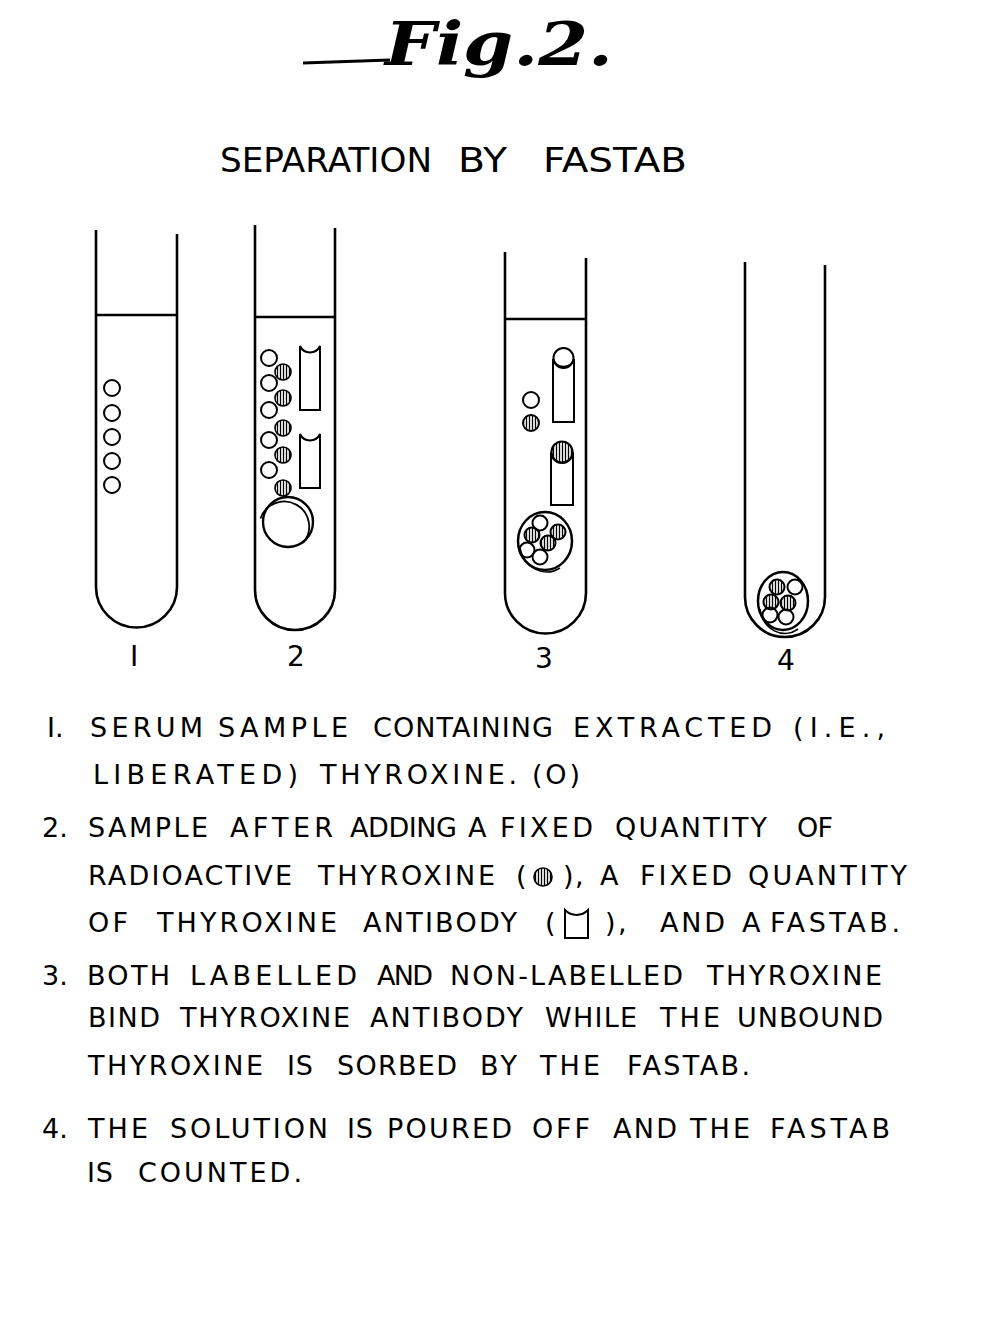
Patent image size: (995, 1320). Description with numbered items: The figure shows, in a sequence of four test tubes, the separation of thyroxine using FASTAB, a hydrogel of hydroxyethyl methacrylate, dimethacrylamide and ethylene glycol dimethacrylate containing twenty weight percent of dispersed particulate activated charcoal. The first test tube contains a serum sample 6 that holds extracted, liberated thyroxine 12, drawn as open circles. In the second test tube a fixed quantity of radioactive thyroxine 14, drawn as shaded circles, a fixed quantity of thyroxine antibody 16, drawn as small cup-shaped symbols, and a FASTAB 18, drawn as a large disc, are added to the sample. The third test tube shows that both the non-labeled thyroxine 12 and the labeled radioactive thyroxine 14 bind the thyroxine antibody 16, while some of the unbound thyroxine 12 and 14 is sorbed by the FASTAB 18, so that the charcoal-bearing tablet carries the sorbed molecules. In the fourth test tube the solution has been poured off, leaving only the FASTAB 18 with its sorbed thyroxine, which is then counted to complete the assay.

The serum sample 6 is at (112, 307).
The extracted thyroxine 12 is at (104, 414).
The radioactive thyroxine 14 is at (287, 364).
The thyroxine antibody 16 is at (312, 388).
The FASTAB 18 is at (298, 520).